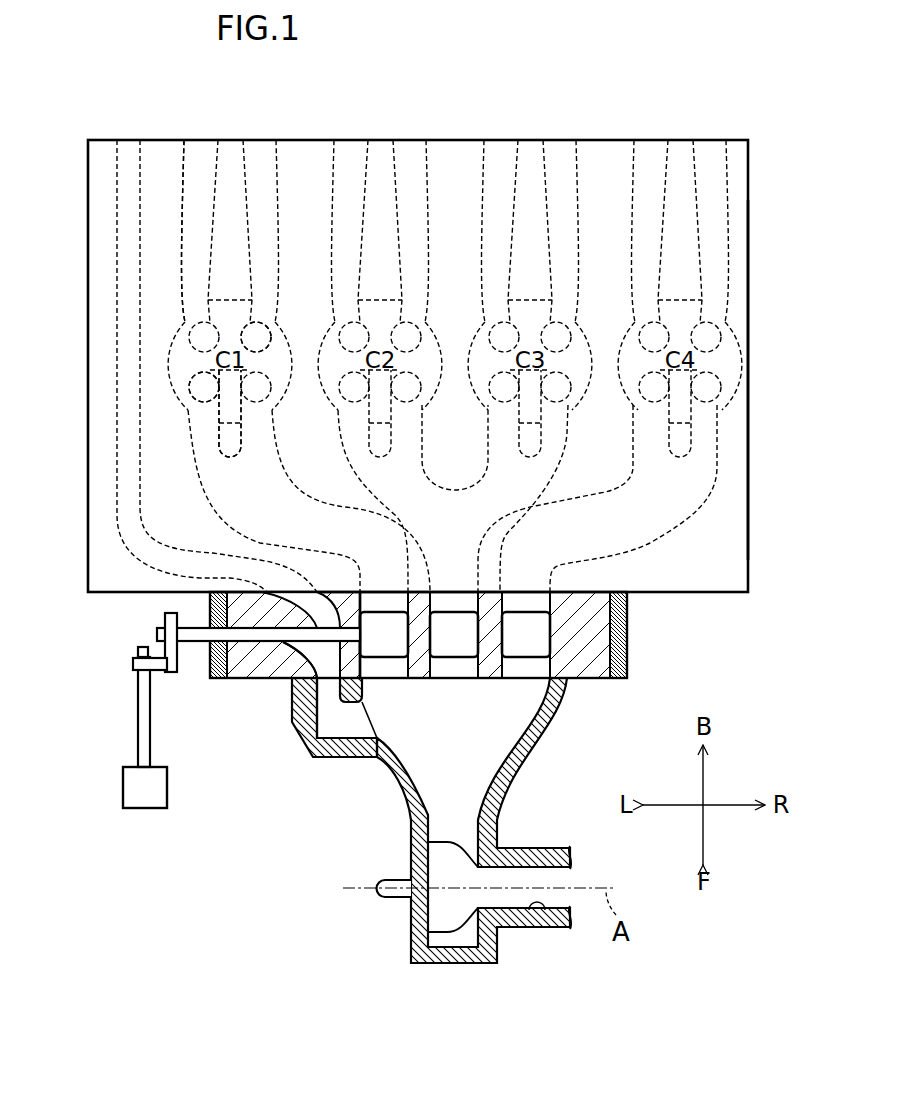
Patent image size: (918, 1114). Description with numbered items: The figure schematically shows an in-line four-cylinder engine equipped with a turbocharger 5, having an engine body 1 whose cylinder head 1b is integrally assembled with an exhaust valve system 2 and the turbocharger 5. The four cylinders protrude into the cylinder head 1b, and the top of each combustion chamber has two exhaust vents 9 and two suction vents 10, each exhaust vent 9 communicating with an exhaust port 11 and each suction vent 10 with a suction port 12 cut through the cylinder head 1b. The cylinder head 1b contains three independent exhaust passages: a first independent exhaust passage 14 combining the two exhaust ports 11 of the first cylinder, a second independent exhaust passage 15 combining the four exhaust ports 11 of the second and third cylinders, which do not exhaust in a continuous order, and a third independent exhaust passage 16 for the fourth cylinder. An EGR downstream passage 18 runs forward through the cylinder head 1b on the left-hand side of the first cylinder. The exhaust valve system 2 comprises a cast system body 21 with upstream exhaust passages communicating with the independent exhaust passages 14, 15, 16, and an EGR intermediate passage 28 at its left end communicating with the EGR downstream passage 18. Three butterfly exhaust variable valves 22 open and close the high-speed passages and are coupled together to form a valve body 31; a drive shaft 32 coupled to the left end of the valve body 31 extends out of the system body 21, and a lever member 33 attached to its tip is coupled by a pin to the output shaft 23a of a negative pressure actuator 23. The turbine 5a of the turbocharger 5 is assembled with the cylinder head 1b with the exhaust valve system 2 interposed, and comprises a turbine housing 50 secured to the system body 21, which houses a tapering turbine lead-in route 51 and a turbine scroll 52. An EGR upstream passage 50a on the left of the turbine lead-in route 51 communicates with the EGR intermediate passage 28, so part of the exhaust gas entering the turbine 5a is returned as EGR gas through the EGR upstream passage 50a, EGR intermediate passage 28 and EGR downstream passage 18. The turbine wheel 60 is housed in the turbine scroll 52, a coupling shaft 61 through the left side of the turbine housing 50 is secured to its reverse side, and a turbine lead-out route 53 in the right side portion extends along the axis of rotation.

The engine body 1 is at (758, 420).
The cylinder head 1b is at (749, 256).
The exhaust valve system 2 is at (452, 687).
The turbocharger 5 is at (459, 899).
The turbine 5a is at (459, 885).
The exhaust vent 9 is at (203, 396).
The suction vent 10 is at (268, 335).
The exhaust port 11 is at (258, 418).
The suction port 12 is at (188, 158).
The first independent exhaust passage 14 is at (236, 480).
The second independent exhaust passage 15 is at (490, 513).
The third independent exhaust passage 16 is at (660, 506).
The EGR downstream passage 18 is at (113, 468).
The system body 21 is at (242, 680).
The exhaust variable valve 22 is at (523, 613).
The negative pressure actuator 23 is at (134, 789).
The output shaft 23a is at (140, 725).
The EGR intermediate passage 28 is at (324, 665).
The valve body 31 is at (560, 644).
The drive shaft 32 is at (287, 668).
The lever member 33 is at (170, 669).
The turbine housing 50 is at (412, 793).
The EGR upstream passage 50a is at (362, 724).
The turbine lead-in route 51 is at (440, 749).
The turbine scroll 52 is at (450, 942).
The turbine lead-out route 53 is at (540, 912).
The turbine wheel 60 is at (457, 904).
The coupling shaft 61 is at (394, 898).